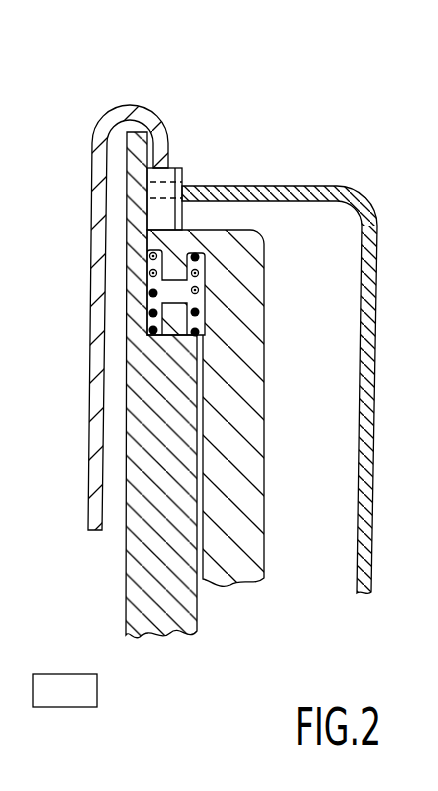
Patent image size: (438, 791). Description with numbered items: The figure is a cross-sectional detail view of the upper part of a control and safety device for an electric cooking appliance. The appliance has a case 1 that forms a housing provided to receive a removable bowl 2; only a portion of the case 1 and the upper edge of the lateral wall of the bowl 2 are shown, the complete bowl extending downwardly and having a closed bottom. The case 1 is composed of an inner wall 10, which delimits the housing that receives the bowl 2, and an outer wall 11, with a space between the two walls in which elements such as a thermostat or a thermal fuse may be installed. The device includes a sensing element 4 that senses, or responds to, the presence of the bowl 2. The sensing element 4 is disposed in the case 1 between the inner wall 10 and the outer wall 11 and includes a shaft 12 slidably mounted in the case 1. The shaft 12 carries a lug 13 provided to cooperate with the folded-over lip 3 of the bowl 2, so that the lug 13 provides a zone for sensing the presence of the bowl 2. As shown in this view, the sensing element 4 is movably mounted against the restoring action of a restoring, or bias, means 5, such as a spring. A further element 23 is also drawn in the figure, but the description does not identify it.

The case 1 is at (317, 184).
The bowl 2 is at (92, 450).
The folded-over lip 3 is at (131, 106).
The sensing element 4 is at (270, 329).
The restoring means 5 is at (150, 318).
The inner wall 10 is at (146, 590).
The outer wall 11 is at (362, 489).
The shaft 12 is at (240, 412).
The lug 13 is at (176, 168).
The element 23 is at (67, 696).